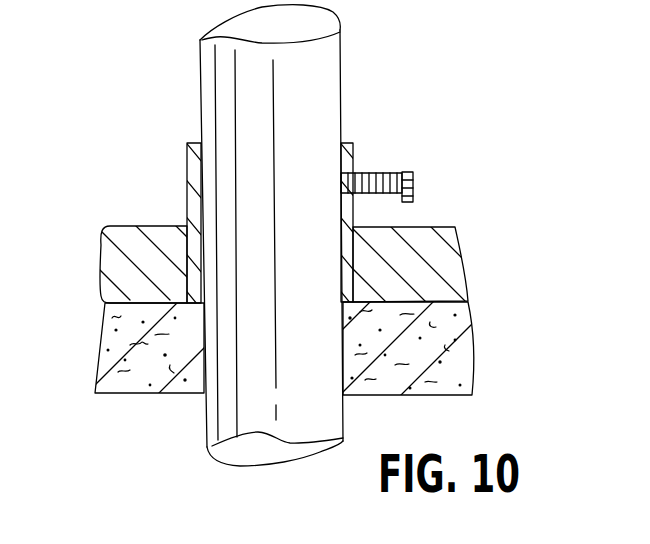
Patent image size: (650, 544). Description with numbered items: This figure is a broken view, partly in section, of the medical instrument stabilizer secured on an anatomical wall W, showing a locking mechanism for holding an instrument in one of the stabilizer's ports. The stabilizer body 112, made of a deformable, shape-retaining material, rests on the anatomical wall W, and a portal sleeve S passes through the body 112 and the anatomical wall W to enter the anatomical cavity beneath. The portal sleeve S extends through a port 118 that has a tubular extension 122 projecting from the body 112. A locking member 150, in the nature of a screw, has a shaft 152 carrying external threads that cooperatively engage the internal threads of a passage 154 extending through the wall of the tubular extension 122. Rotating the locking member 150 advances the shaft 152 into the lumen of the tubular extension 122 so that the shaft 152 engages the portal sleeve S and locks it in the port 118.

The portal sleeve S is at (302, 98).
The body 112 is at (115, 255).
The port 118 is at (198, 269).
The tubular extension 122 is at (352, 164).
The locking member 150 is at (449, 195).
The shaft 152 is at (374, 195).
The passage 154 is at (373, 174).
The anatomical wall W is at (468, 356).